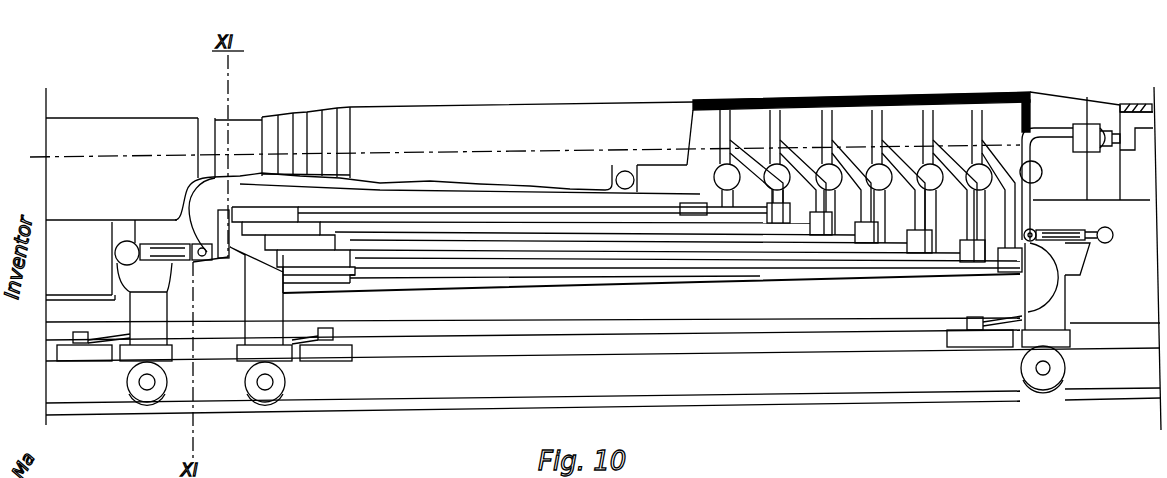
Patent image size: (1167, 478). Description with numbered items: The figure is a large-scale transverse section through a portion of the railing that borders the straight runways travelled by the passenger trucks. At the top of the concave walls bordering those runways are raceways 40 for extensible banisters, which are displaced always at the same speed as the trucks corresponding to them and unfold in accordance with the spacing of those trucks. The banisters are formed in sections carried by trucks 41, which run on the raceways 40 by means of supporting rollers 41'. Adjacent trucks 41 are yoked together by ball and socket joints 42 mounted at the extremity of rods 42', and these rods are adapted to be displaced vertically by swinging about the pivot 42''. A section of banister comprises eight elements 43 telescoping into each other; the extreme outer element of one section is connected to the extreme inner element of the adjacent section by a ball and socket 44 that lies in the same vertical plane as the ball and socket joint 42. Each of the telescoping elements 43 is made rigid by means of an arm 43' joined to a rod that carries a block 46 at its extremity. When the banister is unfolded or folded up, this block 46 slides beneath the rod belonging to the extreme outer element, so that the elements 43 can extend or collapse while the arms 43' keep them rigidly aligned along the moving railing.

The raceways 40 is at (353, 407).
The trucks 41 is at (603, 290).
The supporting rollers 41' is at (619, 375).
The ball and socket joints 42 is at (633, 274).
The rods 42' is at (1113, 223).
The swinging pivot 42'' is at (1060, 222).
The telescoping elements 43 is at (599, 173).
The arm 43' is at (856, 193).
The ball and socket 44 is at (1095, 135).
The block 46 is at (283, 237).